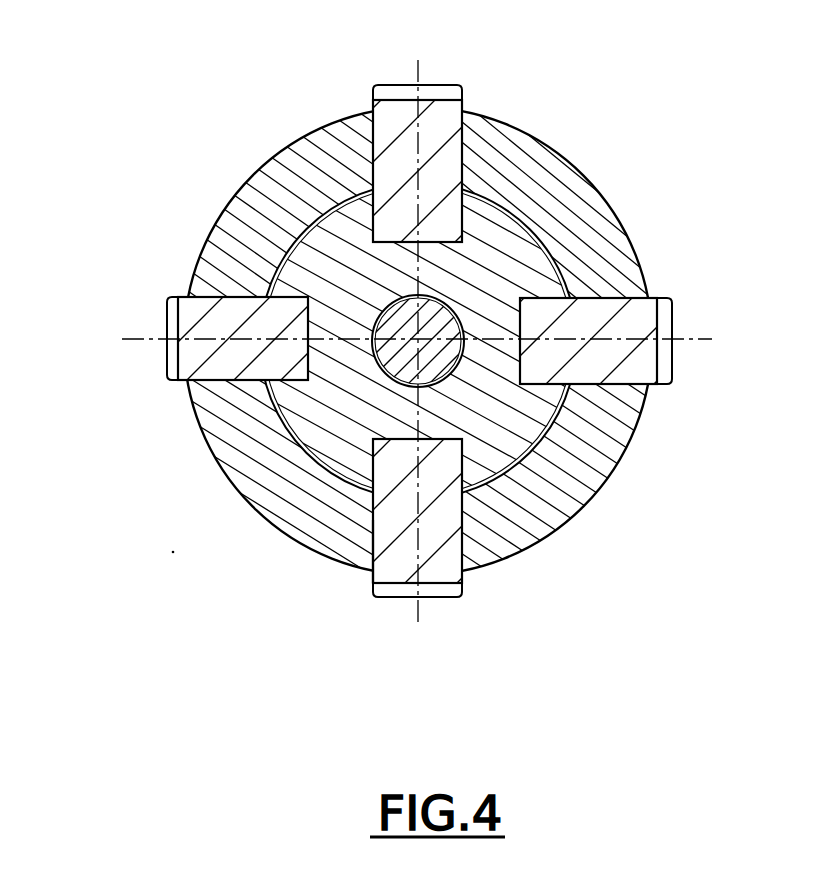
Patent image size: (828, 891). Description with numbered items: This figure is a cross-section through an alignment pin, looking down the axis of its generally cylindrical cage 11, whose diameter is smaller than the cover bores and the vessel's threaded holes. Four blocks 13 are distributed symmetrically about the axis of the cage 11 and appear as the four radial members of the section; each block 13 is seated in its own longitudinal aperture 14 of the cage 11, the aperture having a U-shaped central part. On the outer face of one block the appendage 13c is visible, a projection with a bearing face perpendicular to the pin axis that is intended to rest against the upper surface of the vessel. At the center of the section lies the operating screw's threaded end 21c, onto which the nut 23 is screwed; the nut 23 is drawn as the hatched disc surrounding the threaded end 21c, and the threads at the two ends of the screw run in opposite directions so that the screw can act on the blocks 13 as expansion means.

The cage 11 is at (541, 508).
The block 13 is at (440, 115).
The appendage 13c is at (445, 590).
The longitudinal aperture 14 is at (360, 541).
The threaded end 21c is at (388, 352).
The nut 23 is at (335, 445).